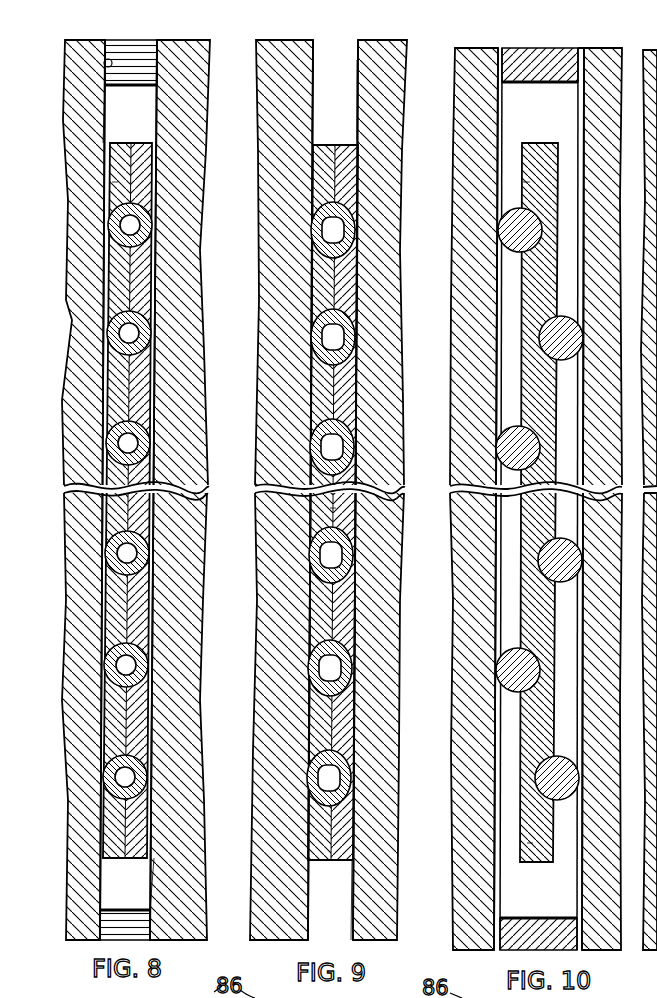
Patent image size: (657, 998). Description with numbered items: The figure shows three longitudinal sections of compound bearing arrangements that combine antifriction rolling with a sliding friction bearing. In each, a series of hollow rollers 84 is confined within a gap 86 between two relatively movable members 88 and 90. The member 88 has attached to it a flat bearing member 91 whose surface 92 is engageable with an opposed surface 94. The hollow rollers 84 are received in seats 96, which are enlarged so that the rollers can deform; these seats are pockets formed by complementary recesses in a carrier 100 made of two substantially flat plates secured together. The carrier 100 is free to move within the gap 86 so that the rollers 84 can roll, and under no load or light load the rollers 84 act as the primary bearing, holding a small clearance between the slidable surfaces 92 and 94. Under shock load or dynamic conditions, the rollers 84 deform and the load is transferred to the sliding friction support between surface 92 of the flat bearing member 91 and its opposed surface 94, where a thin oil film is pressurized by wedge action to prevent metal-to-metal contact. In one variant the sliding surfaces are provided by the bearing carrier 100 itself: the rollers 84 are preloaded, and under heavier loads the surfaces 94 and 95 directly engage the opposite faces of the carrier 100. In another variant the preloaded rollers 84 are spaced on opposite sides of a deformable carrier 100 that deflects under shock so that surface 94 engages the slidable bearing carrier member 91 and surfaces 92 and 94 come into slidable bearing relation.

In FIG. 8, the hollow rollers 84 is at (151, 229).
In FIG. 9, the hollow rollers 84 is at (350, 241).
In FIG. 10, the hollow rollers 84 is at (500, 452).
In FIG. 8, the gap 86 is at (150, 123).
In FIG. 9, the gap 86 is at (328, 62).
In FIG. 10, the gap 86 is at (463, 586).
In FIG. 8, the relatively movable member 88 is at (199, 443).
In FIG. 9, the relatively movable member 88 is at (390, 318).
In FIG. 10, the relatively movable member 88 is at (608, 951).
In FIG. 8, the relatively movable member 90 is at (72, 322).
In FIG. 9, the relatively movable member 90 is at (265, 364).
In FIG. 10, the relatively movable member 90 is at (458, 348).
In FIG. 8, the flat bearing member 91 is at (130, 47).
In FIG. 10, the flat bearing member 91 is at (548, 56).
In FIG. 8, the surface 92 is at (106, 63).
In FIG. 10, the surface 92 is at (580, 56).
In FIG. 8, the opposed surface 94 is at (105, 128).
In FIG. 9, the opposed surface 94 is at (320, 50).
In FIG. 10, the opposed surface 94 is at (497, 133).
In FIG. 8, the surface 95 is at (158, 848).
In FIG. 9, the surface 95 is at (353, 55).
In FIG. 10, the surface 95 is at (577, 499).
In FIG. 8, the seats 96 is at (155, 362).
In FIG. 9, the seats 96 is at (350, 309).
In FIG. 10, the seats 96 is at (539, 502).
In FIG. 8, the carrier 100 is at (117, 183).
In FIG. 9, the carrier 100 is at (347, 512).
In FIG. 10, the carrier 100 is at (523, 183).